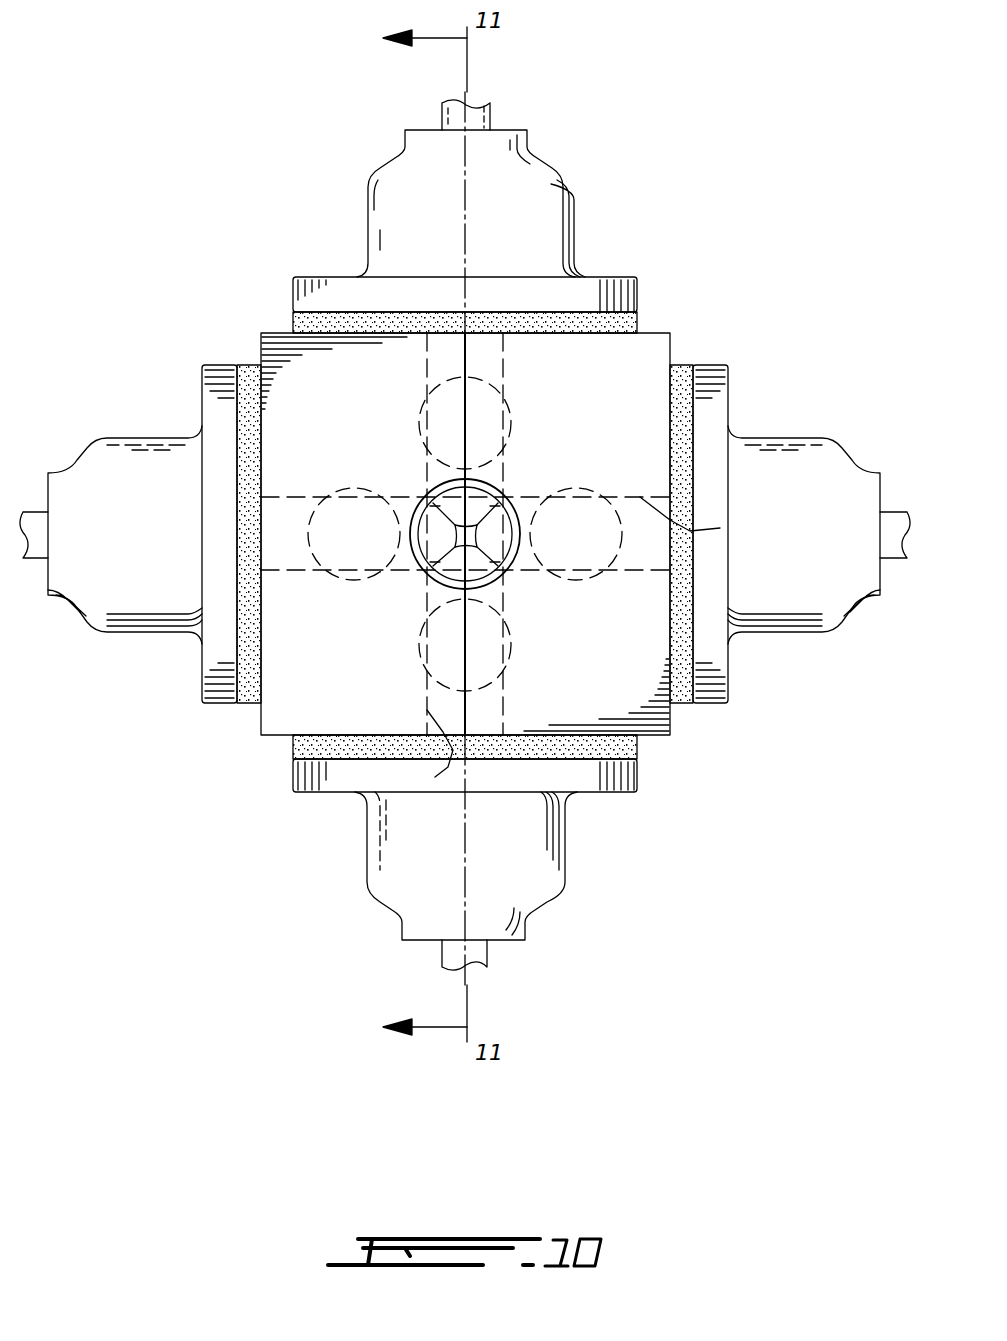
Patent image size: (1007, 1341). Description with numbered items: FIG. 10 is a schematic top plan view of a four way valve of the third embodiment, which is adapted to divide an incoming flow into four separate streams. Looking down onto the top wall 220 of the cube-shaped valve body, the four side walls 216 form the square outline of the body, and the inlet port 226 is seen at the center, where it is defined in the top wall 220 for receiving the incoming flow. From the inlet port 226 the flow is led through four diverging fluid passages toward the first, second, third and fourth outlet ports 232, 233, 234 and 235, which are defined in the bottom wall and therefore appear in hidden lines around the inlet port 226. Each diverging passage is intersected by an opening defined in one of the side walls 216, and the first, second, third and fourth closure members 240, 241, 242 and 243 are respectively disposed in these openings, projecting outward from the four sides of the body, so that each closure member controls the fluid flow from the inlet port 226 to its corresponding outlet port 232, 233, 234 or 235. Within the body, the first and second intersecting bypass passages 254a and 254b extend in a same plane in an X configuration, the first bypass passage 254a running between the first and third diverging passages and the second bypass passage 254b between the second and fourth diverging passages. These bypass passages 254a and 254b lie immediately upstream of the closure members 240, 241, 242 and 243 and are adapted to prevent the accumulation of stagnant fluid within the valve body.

The top wall 220 is at (400, 476).
The side walls 216 is at (418, 579).
The third closure member 242 is at (480, 206).
The first closure member 240 is at (507, 864).
The second closure member 241 is at (801, 494).
The fourth closure member 243 is at (128, 515).
The inlet port 226 is at (605, 631).
The first outlet port 232 is at (582, 727).
The second outlet port 233 is at (640, 412).
The third outlet port 234 is at (377, 323).
The fourth outlet port 235 is at (266, 644).
The first bypass passage 254a is at (349, 824).
The second bypass passage 254b is at (772, 453).